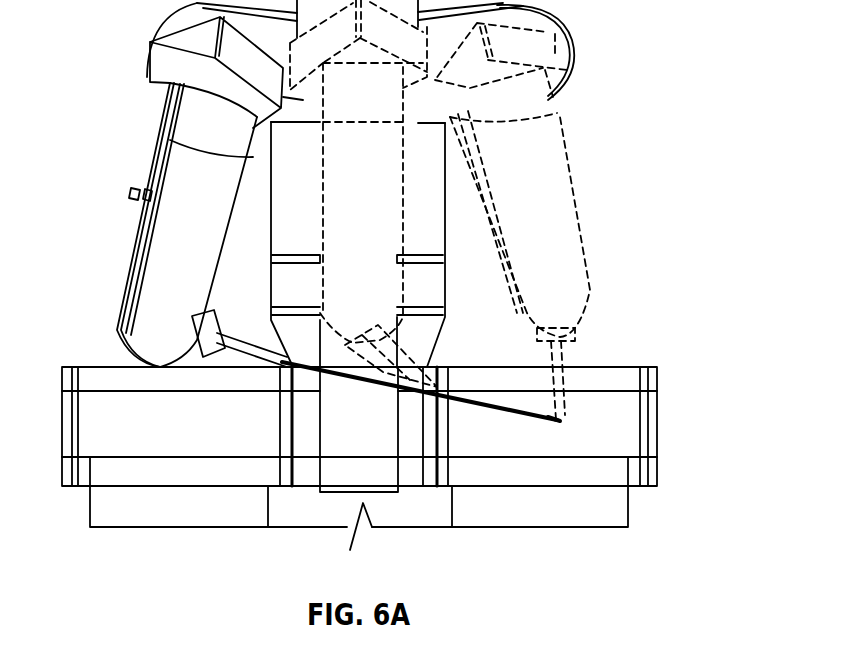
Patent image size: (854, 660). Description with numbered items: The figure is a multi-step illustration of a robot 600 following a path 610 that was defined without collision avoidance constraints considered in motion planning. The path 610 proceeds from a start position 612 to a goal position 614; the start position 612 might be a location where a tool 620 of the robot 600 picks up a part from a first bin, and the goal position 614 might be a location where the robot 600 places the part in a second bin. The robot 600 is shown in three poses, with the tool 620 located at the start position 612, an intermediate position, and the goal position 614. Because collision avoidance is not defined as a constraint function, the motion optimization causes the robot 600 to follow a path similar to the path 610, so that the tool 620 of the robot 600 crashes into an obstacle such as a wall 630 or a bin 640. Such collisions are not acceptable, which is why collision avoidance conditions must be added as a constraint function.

The robot 600 is at (150, 103).
The path 610 is at (453, 401).
The start position 612 is at (285, 356).
The goal position 614 is at (560, 422).
The tool 620 is at (243, 348).
The wall 630 is at (348, 477).
The bin 640 is at (657, 425).